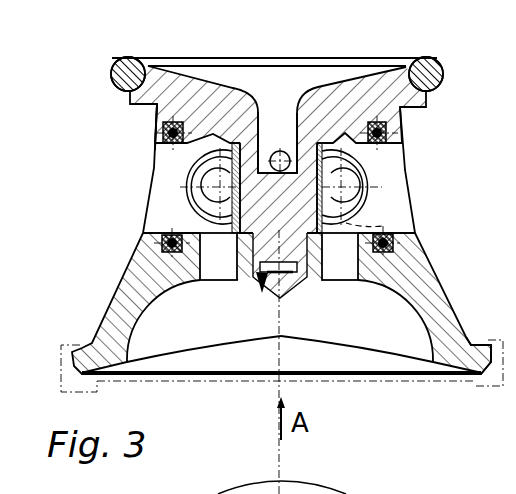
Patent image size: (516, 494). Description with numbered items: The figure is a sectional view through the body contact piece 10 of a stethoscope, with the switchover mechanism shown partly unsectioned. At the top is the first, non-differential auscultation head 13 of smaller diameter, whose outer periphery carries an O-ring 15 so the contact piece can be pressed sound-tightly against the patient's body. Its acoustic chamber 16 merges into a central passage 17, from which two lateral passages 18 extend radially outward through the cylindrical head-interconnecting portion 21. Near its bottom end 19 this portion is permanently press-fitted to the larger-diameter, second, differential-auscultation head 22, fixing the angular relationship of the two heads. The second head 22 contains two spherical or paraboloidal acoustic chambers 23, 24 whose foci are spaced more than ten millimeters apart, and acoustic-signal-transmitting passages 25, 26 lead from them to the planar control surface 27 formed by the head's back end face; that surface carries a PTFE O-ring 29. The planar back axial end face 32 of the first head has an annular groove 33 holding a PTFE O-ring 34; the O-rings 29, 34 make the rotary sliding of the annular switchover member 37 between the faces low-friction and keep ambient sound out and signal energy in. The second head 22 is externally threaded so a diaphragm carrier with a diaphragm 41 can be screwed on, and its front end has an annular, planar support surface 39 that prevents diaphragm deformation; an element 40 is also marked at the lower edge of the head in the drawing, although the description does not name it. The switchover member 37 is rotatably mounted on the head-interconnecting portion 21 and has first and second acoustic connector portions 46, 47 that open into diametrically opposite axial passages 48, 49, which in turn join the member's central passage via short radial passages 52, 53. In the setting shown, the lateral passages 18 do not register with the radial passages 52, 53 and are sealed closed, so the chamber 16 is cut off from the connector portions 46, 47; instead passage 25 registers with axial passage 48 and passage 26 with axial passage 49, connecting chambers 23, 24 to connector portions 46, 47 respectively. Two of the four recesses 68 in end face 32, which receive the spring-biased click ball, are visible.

The body contact piece 10 is at (46, 140).
The first, non-differential auscultation head 13 is at (333, 56).
The O-ring 15 is at (438, 63).
The acoustic chamber 16 is at (255, 142).
The central passage 17 is at (279, 145).
The lateral passages 18 is at (285, 152).
The bottom end 19 is at (263, 286).
The head-interconnecting portion 21 is at (276, 216).
The second, differential-auscultation head 22 is at (421, 277).
The acoustic chamber 23 is at (210, 331).
The acoustic chamber 24 is at (390, 333).
The acoustic-signal-transmitting passage 25 is at (231, 263).
The acoustic-signal-transmitting passage 26 is at (353, 263).
The planar control surface 27 is at (148, 232).
The O-ring 29 is at (394, 238).
The planar back axial end face 32 is at (157, 150).
The annular groove 33 is at (388, 130).
The O-ring 34 is at (400, 147).
The annular switchover member 37 is at (412, 210).
The annular, planar support surface 39 is at (480, 376).
The flange 40 is at (72, 368).
The diaphragm 41 is at (391, 382).
The first acoustic connector portion 46 is at (185, 189).
The second acoustic connector portion 47 is at (368, 177).
The axial passage 48 is at (201, 227).
The axial passage 49 is at (414, 212).
The radial passage 52 is at (205, 149).
The radial passage 53 is at (308, 135).
The recesses 68 is at (192, 130).